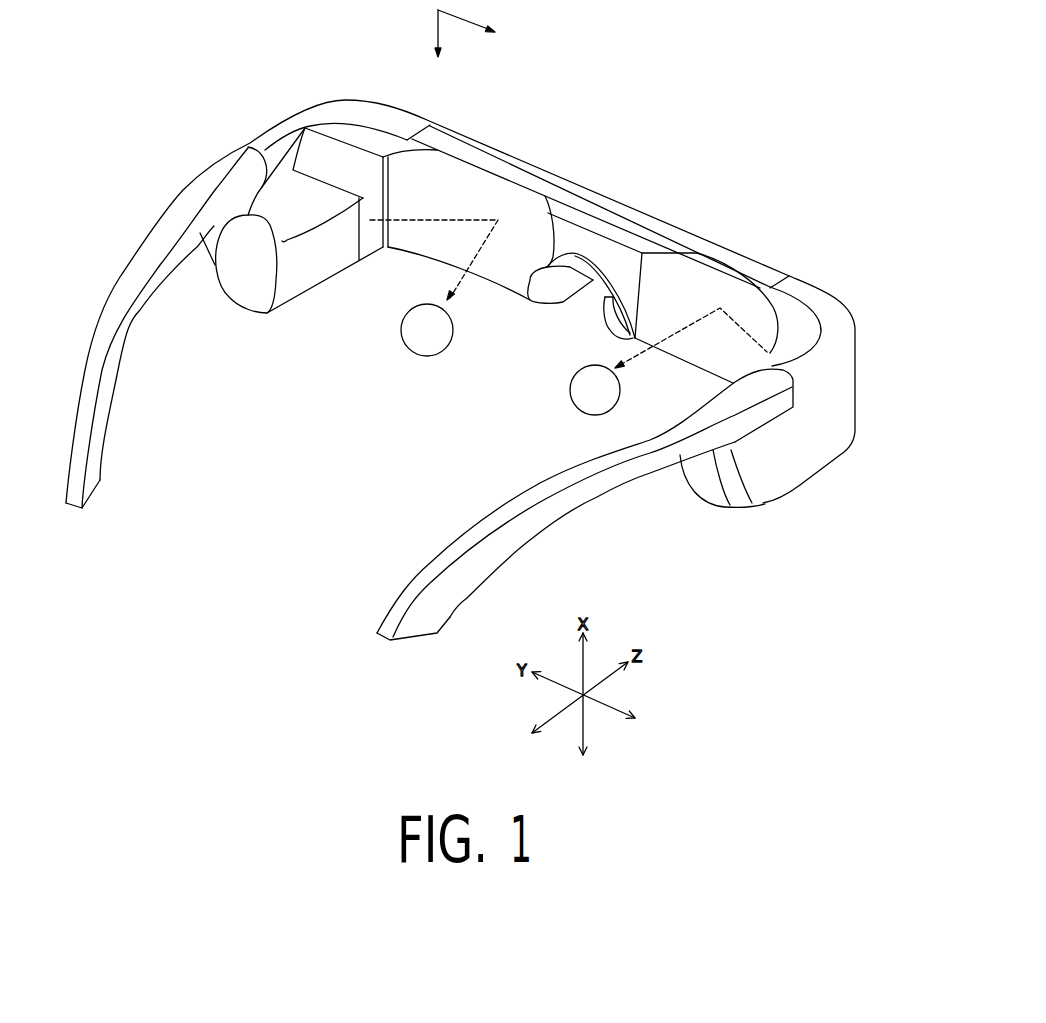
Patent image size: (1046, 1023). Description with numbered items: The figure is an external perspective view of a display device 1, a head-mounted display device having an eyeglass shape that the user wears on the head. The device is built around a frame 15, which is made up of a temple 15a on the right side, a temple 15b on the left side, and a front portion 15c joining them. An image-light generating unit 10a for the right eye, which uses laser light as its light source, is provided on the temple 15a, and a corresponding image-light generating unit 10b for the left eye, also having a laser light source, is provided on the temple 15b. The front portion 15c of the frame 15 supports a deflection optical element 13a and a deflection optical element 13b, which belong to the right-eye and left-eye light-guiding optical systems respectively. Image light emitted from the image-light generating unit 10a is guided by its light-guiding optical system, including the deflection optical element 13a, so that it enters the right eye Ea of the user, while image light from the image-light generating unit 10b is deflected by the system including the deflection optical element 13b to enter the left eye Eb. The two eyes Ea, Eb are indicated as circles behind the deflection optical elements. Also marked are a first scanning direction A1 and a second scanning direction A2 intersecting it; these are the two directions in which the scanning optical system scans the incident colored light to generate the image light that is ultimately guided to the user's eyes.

The display device 1 is at (668, 86).
The image-light generating unit for right eye 10a is at (703, 480).
The image-light generating unit for left eye 10b is at (238, 290).
The deflection optical element 13a is at (707, 272).
The deflection optical element 13b is at (473, 177).
The frame 15 is at (443, 373).
The temple on the right side 15a is at (693, 427).
The temple on the left side 15b is at (217, 163).
The front portion 15c is at (583, 190).
The right eye Ea is at (580, 380).
The left eye Eb is at (417, 342).
The first scanning direction A1 is at (437, 46).
The second scanning direction A2 is at (479, 28).